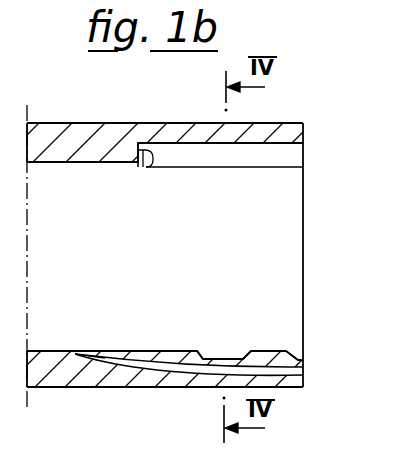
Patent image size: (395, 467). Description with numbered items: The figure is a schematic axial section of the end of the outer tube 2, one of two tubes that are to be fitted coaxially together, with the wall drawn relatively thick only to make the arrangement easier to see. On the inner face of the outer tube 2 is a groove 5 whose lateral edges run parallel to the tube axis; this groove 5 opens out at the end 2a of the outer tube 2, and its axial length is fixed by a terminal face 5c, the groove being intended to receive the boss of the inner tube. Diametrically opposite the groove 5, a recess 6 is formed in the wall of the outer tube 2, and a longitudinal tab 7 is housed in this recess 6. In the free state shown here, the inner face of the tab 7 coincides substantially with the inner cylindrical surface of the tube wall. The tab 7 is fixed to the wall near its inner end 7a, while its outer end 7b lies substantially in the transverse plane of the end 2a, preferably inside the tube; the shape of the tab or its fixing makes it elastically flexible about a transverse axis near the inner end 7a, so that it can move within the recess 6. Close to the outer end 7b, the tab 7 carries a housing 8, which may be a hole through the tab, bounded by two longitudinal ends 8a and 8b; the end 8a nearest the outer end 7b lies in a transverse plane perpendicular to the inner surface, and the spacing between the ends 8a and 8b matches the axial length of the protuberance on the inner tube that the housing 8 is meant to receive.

The outer tube 2 is at (81, 136).
The end of tube 2a is at (305, 128).
The groove 5 is at (233, 157).
The terminal face 5c is at (144, 166).
The recess 6 is at (167, 368).
The longitudinal tab 7 is at (183, 359).
The inner end of tab 7a is at (100, 351).
The outer end of tab 7b is at (263, 353).
The housing 8 is at (226, 350).
The longitudinal end of housing 8a is at (240, 350).
The longitudinal end of housing 8b is at (210, 348).